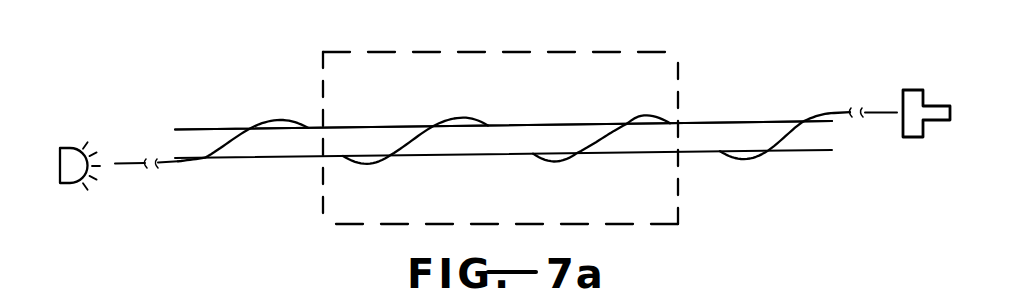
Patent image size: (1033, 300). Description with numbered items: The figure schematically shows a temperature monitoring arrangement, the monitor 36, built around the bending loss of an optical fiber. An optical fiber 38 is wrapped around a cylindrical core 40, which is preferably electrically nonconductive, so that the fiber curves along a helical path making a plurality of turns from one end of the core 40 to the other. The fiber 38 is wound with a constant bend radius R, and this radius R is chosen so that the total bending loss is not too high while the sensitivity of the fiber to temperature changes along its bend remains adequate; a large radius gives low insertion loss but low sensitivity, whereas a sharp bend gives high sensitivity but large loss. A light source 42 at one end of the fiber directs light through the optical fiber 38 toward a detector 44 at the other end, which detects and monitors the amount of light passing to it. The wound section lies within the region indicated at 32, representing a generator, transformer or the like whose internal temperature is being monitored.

The generator, transformer or the like 32 is at (369, 52).
The monitor 36 is at (201, 70).
The optical fiber 38 is at (291, 121).
The cylindrical core 40 is at (279, 159).
The light source 42 is at (68, 150).
The detector 44 is at (912, 90).
The constant bend radius R is at (402, 136).